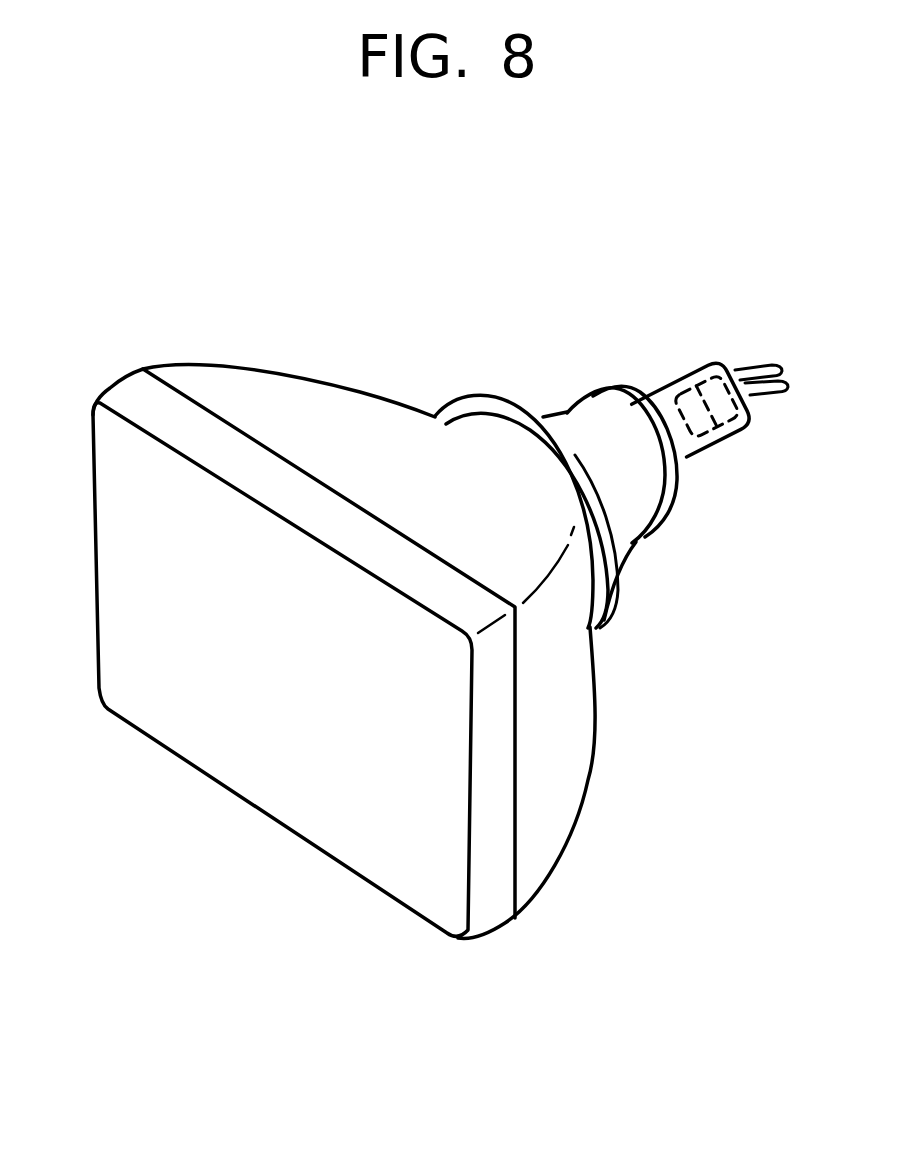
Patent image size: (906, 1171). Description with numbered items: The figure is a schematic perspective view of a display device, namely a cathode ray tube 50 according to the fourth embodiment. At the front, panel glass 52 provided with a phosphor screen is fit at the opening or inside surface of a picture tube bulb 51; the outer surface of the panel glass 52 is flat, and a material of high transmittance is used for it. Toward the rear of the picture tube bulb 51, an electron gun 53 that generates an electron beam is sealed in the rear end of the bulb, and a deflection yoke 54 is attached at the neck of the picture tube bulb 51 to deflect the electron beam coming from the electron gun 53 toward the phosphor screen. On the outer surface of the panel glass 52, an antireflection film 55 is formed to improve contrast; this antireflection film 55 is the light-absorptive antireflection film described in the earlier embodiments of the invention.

The cathode ray tube 50 is at (195, 323).
The picture tube bulb 51 is at (553, 775).
The panel glass 52 is at (243, 717).
The electron gun 53 is at (732, 428).
The deflection yoke 54 is at (628, 513).
The antireflection film 55 is at (418, 892).